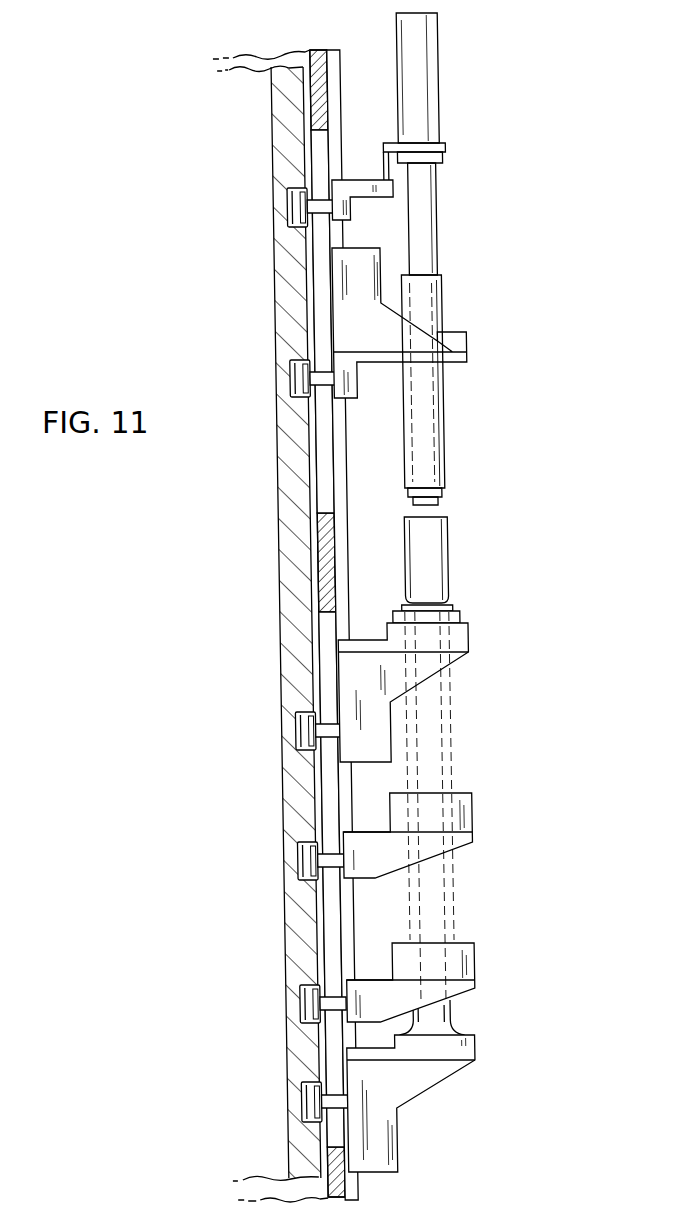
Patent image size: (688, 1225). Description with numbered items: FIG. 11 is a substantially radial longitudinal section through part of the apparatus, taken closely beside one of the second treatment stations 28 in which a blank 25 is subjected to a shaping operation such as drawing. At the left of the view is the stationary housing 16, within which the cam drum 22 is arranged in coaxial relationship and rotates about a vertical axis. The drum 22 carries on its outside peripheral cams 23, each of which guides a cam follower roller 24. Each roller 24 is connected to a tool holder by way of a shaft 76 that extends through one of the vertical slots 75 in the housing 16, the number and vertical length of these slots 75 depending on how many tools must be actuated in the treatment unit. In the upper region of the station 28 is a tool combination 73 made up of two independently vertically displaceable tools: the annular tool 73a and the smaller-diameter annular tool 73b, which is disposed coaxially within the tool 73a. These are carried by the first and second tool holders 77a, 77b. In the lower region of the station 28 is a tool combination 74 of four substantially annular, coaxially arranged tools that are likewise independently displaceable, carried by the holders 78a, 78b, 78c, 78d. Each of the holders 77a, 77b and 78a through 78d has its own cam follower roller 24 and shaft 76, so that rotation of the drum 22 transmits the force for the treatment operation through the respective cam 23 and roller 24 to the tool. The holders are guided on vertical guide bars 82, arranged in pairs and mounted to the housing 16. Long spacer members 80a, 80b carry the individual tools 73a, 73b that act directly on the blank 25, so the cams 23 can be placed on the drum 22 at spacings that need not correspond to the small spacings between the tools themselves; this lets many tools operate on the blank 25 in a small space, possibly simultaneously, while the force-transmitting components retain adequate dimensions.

The housing 16 is at (319, 80).
The cam drum 22 is at (278, 255).
The cam 23 is at (285, 213).
The cam follower roller 24 is at (297, 203).
The blank 25 is at (440, 532).
The second treatment station 28 is at (486, 556).
The tool combination 73 is at (429, 494).
The tool 73a is at (405, 493).
The tool 73b is at (431, 503).
The tool combination 74 is at (456, 599).
The vertical slot 75 is at (313, 298).
The shaft 76 is at (330, 860).
The first tool holder 77a is at (460, 353).
The second tool holder 77b is at (441, 152).
The holder 78a is at (382, 680).
The holder 78b is at (388, 860).
The holder 78c is at (364, 988).
The holder 78d is at (391, 1082).
The spacer member 80a is at (439, 412).
The spacer member 80b is at (432, 240).
The guide bar 82 is at (336, 122).